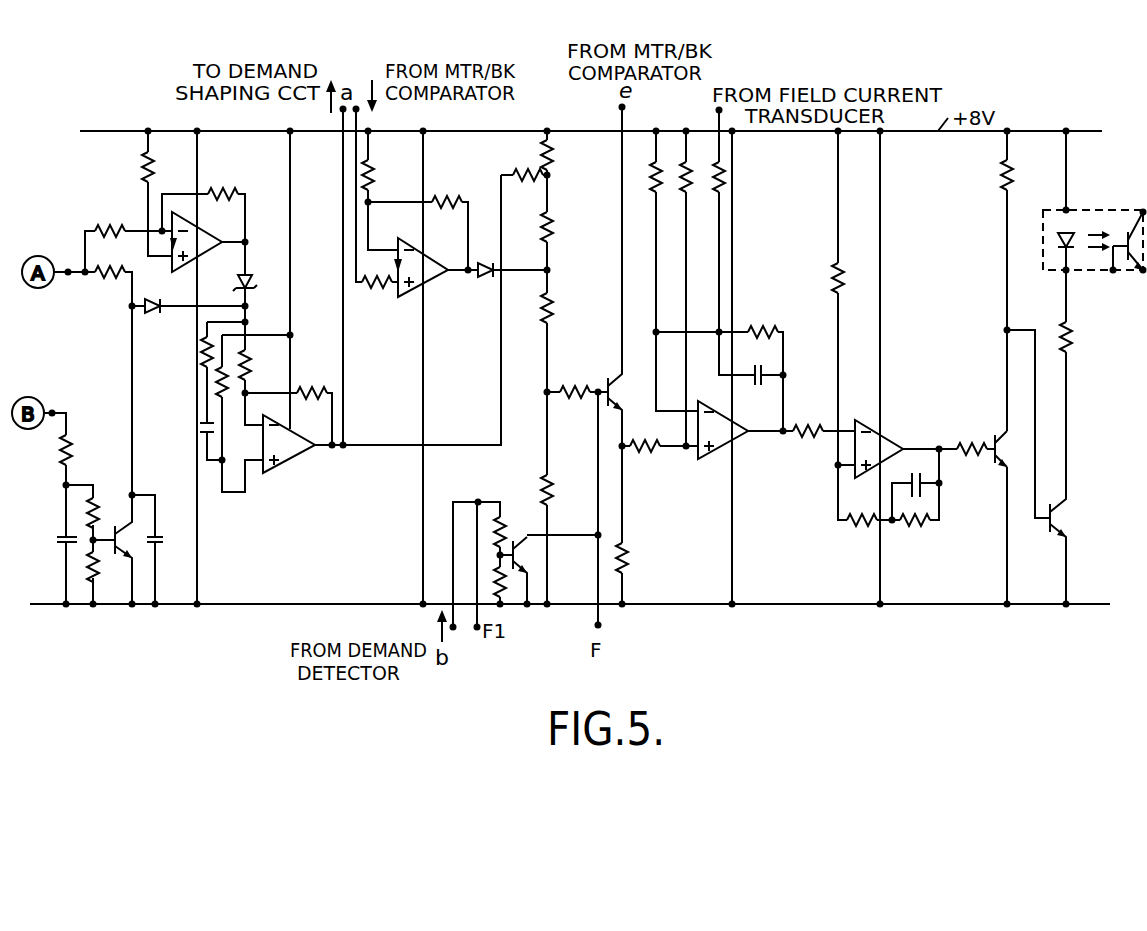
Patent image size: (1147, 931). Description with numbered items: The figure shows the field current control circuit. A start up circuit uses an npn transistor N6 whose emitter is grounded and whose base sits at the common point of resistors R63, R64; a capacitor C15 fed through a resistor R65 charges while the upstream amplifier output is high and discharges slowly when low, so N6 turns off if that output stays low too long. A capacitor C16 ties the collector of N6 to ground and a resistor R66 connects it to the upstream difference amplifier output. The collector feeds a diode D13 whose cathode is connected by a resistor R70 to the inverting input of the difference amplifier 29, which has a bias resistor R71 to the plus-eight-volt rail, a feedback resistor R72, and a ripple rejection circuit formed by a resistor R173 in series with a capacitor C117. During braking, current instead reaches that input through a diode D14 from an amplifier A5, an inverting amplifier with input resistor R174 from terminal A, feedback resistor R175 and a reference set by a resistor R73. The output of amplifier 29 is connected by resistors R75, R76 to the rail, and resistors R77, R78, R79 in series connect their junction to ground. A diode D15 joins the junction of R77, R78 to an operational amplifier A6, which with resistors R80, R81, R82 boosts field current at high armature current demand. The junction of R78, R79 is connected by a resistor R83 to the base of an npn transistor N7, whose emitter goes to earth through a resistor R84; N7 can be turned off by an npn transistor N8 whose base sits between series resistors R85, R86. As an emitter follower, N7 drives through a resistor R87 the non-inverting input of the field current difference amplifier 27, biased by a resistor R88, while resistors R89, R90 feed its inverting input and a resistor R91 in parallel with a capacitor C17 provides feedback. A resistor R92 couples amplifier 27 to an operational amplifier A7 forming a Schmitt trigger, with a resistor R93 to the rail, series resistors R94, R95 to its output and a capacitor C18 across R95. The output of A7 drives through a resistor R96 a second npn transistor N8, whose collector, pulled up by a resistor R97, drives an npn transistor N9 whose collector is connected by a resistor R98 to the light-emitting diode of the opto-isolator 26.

The opto-isolator 26 is at (1098, 217).
The field current difference amplifier 27 is at (722, 420).
The difference amplifier 29 is at (298, 448).
The amplifier A5 is at (213, 243).
The operational amplifier A6 is at (432, 268).
The operational amplifier A7 is at (888, 450).
The resistor R63 is at (117, 474).
The resistor R64 is at (96, 564).
The resistor R65 is at (60, 465).
The resistor R66 is at (112, 282).
The resistor R70 is at (266, 377).
The bias resistor R71 is at (232, 392).
The feedback resistor R72 is at (315, 383).
The resistor R73 is at (142, 163).
The resistor R75 is at (520, 171).
The resistor R76 is at (553, 161).
The resistor R77 is at (552, 220).
The resistor R78 is at (553, 303).
The resistor R79 is at (556, 480).
The resistor R80 is at (450, 196).
The resistor R81 is at (375, 182).
The resistor R82 is at (380, 290).
The resistor R83 is at (578, 377).
The resistor R84 is at (630, 554).
The resistor R85 is at (508, 528).
The resistor R86 is at (510, 578).
The resistor R87 is at (645, 456).
The resistor R88 is at (682, 178).
The resistor R89 is at (655, 178).
The resistor R90 is at (715, 180).
The resistor R91 is at (763, 325).
The resistor R92 is at (812, 425).
The resistor R93 is at (832, 280).
The resistor R94 is at (845, 530).
The resistor R95 is at (913, 531).
The resistor R96 is at (972, 461).
The resistor R97 is at (1000, 178).
The resistor R98 is at (1055, 336).
The resistor R173 is at (200, 350).
The resistor R174 is at (108, 240).
The resistor R175 is at (226, 193).
The capacitor C15 is at (58, 540).
The capacitor C16 is at (163, 542).
The capacitor C17 is at (761, 391).
The capacitor C18 is at (922, 474).
The capacitor C117 is at (201, 436).
The diode D13 is at (155, 316).
The diode D14 is at (230, 288).
The diode D15 is at (488, 285).
The npn transistor N6 is at (137, 552).
The npn transistor N7 is at (629, 392).
The npn transistor N8 is at (777, 502).
The npn transistor N9 is at (1075, 521).